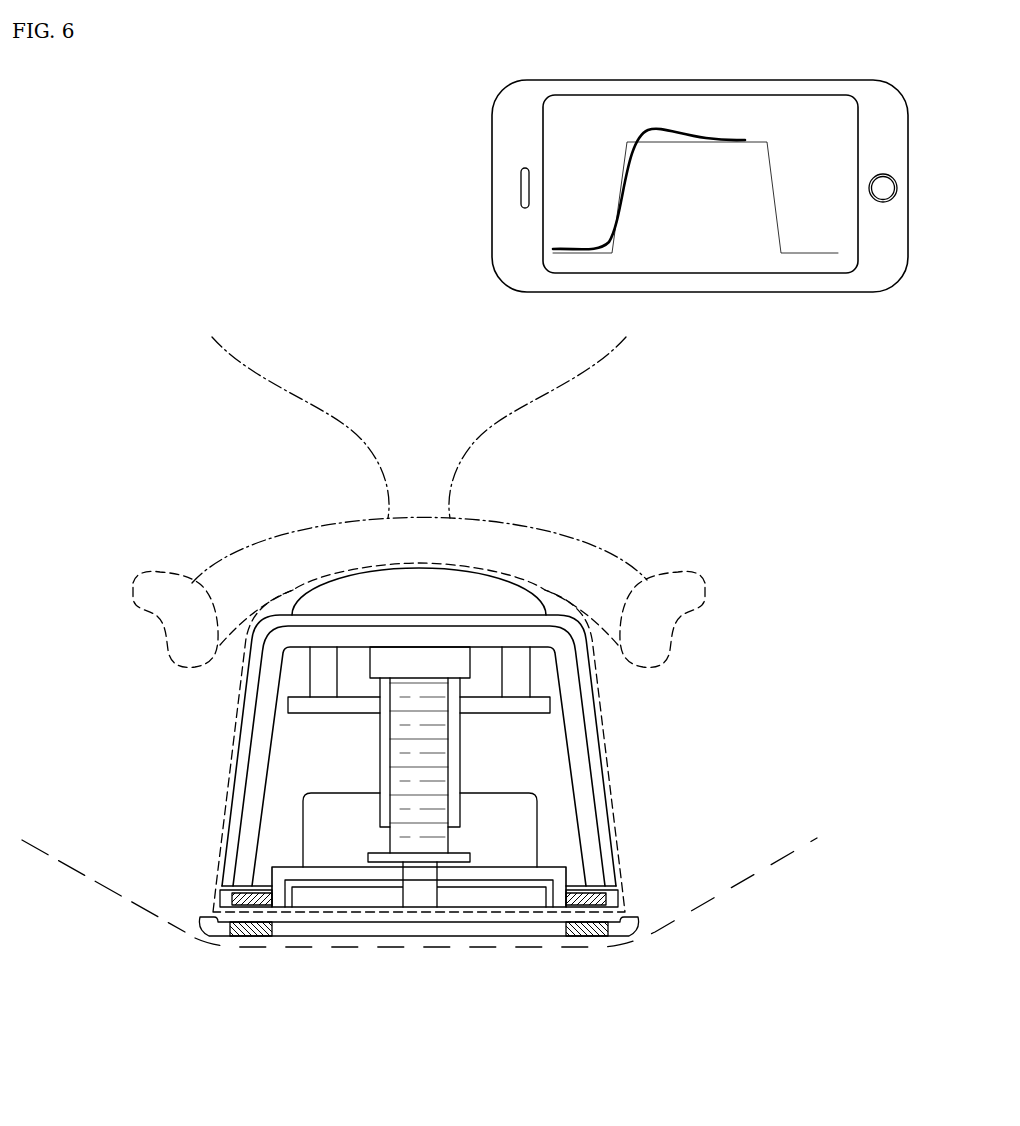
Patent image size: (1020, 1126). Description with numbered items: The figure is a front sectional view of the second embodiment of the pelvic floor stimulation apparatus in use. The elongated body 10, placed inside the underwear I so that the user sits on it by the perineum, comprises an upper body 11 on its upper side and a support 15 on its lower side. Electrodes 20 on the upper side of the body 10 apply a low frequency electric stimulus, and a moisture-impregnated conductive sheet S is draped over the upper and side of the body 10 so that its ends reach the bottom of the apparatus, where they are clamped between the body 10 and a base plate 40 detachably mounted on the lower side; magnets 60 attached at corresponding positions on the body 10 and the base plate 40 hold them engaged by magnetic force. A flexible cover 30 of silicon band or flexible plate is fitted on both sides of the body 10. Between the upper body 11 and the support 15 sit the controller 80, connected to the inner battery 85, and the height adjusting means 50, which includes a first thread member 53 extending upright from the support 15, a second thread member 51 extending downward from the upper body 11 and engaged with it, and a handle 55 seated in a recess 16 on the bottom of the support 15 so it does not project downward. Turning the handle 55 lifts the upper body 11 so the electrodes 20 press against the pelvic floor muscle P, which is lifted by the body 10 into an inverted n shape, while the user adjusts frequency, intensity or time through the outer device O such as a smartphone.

The body 10 is at (499, 777).
The upper body 11 is at (578, 762).
The support 15 is at (556, 868).
The recess 16 is at (293, 910).
The electrodes 20 is at (342, 587).
The flexible cover 30 is at (593, 720).
The base plate 40 is at (632, 937).
The height adjusting means 50 is at (419, 846).
The second thread member 51 is at (458, 810).
The first thread member 53 is at (443, 842).
The handle 55 is at (520, 1000).
The magnets 60 is at (260, 908).
The controller 80 is at (320, 707).
The inner battery 85 is at (312, 818).
The conductive sheet S is at (287, 600).
The pelvic floor muscle P is at (570, 540).
The outer device O is at (726, 282).
The underwear I is at (725, 893).